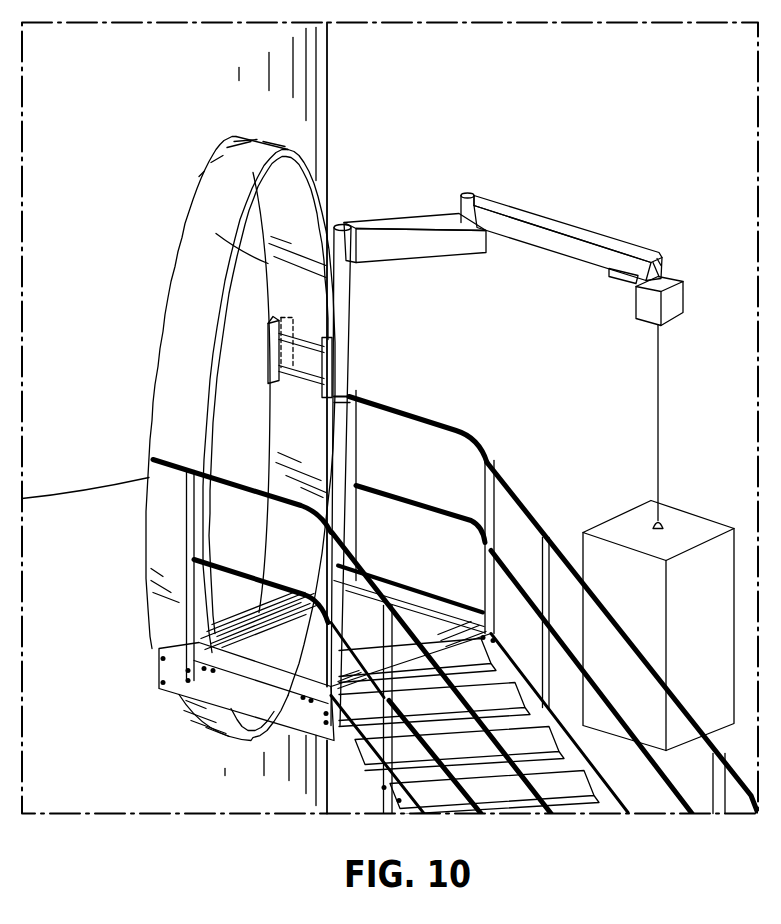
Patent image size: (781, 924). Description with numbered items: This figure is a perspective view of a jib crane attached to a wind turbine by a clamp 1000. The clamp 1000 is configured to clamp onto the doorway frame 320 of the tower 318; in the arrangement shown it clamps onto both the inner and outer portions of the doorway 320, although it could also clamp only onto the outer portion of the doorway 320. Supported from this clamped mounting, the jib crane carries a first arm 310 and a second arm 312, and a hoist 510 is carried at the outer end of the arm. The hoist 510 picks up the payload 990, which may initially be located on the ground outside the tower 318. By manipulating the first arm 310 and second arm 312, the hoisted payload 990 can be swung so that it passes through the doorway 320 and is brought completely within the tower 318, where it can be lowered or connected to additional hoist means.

The tower 318 is at (125, 136).
The doorway 320 is at (192, 228).
The clamp 1000 is at (272, 354).
The second arm 312 is at (406, 214).
The first arm 310 is at (560, 226).
The hoist 510 is at (675, 302).
The payload 990 is at (618, 563).